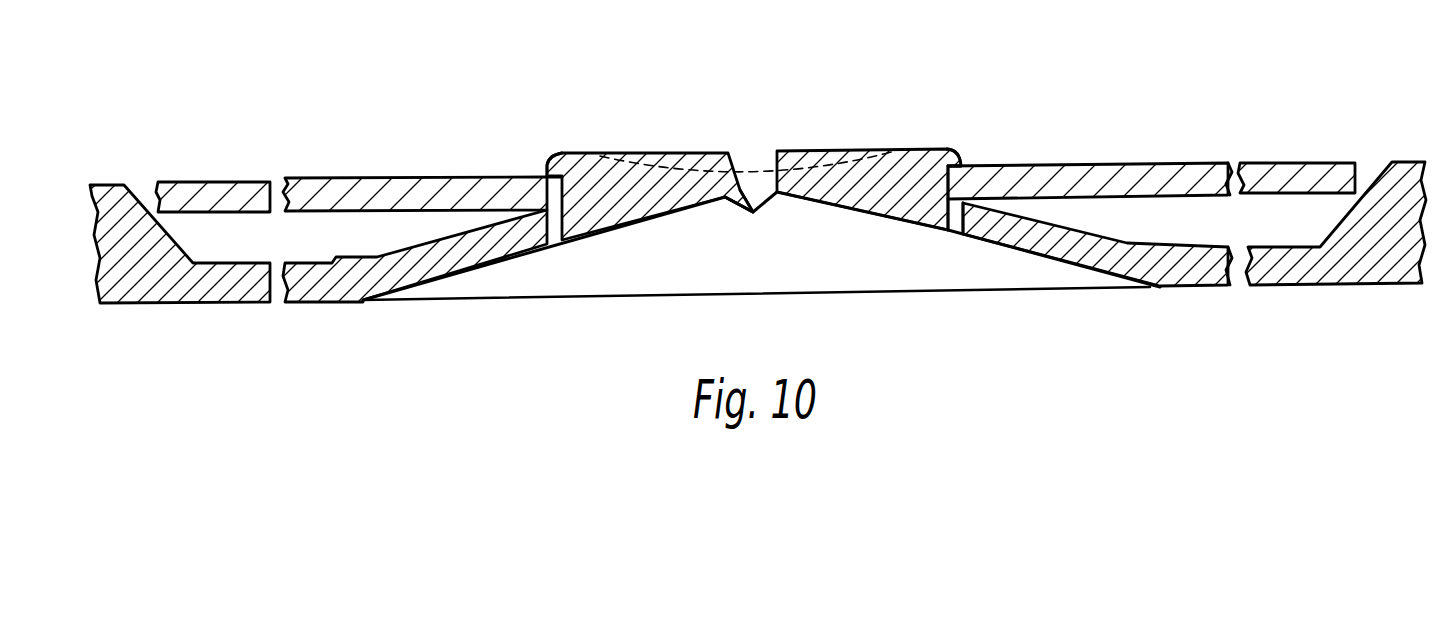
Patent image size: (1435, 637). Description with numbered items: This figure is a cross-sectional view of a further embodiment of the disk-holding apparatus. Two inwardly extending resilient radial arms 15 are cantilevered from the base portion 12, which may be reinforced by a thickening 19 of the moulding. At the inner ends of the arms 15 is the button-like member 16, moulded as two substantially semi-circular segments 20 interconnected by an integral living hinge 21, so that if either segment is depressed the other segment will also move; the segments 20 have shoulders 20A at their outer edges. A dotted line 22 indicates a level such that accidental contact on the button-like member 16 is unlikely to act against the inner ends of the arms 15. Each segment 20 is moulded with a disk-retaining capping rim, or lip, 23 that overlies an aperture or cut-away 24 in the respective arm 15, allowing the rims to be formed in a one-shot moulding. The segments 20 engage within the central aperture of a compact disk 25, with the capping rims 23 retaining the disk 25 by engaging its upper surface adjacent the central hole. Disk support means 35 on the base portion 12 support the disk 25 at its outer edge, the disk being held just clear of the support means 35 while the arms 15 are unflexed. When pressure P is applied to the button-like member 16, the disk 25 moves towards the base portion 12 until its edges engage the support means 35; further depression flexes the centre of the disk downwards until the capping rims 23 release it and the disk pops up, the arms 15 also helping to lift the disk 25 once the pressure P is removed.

The base portion 12 is at (1297, 270).
The radial arms 15 is at (1040, 248).
The button-like member 16 is at (827, 153).
The thickening 19 is at (1170, 243).
The semi-circular segments 20 is at (597, 155).
The shoulder of die block 20A is at (553, 158).
The living hinge 21 is at (742, 210).
The dotted line 22 is at (693, 155).
The capping rim 23 is at (967, 161).
The aperture 24 is at (958, 233).
The compact disk 25 is at (360, 190).
The disk support means 35 is at (113, 198).
The pressure P is at (751, 117).